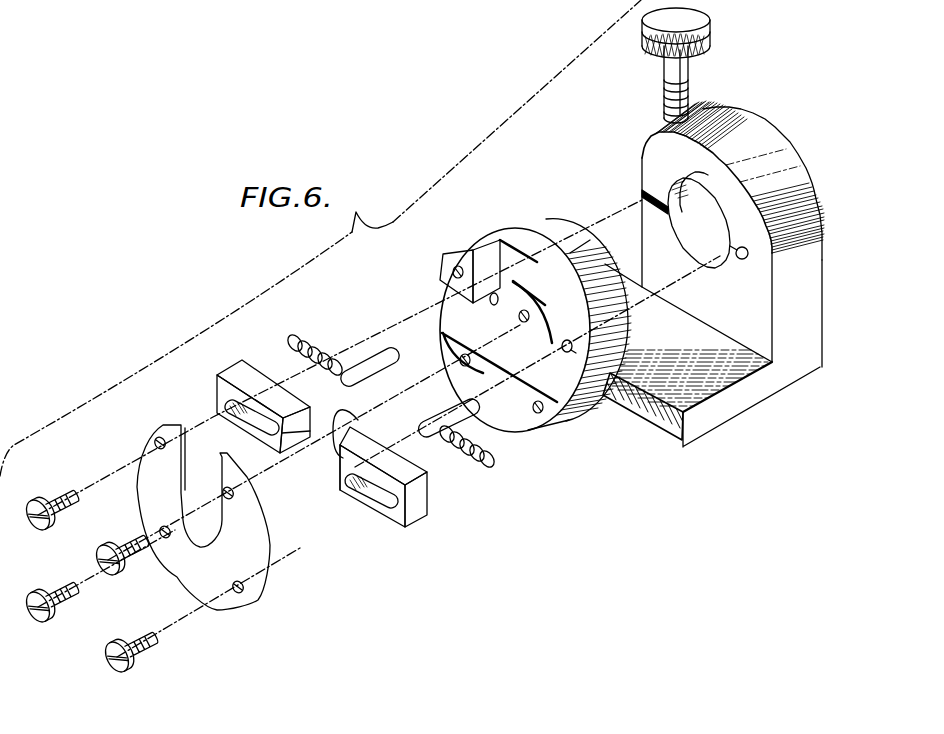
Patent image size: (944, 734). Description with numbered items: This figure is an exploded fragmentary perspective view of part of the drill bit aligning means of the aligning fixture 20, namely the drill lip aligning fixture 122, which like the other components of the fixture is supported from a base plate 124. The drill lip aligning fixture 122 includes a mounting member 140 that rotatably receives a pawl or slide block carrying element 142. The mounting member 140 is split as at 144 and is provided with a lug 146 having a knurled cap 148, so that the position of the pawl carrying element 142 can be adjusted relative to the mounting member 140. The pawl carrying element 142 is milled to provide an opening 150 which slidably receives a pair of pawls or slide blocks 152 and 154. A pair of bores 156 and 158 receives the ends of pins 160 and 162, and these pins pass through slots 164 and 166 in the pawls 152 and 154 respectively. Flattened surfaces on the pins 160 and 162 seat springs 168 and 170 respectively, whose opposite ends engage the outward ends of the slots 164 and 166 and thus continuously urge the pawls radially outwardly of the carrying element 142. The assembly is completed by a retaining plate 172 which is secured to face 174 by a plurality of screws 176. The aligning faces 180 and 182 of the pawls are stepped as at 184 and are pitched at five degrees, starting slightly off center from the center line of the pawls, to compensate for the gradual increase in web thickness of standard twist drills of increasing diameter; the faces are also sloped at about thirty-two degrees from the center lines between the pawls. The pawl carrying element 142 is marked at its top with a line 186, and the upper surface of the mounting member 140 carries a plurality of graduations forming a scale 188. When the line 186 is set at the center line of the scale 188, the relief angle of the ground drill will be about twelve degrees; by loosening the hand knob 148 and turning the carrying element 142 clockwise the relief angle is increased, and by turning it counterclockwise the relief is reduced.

The aligning fixture 20 is at (542, 323).
The drill lip aligning fixture 122 is at (718, 291).
The base plate 124 is at (737, 400).
The mounting member 140 is at (785, 177).
The pawl carrying element 142 is at (542, 289).
The split 144 is at (640, 197).
The lug 146 is at (688, 82).
The knurled cap 148 is at (711, 34).
The opening 150 is at (562, 388).
The pawl 152 is at (361, 500).
The pawl 154 is at (232, 415).
The bore 156 is at (574, 347).
The bore 158 is at (505, 262).
The pin 160 is at (467, 410).
The pin 162 is at (388, 350).
The slot 164 is at (372, 497).
The slot 166 is at (230, 402).
The spring 168 is at (470, 463).
The spring 170 is at (324, 343).
The retaining plate 172 is at (256, 574).
The face 174 is at (483, 372).
The screws 176 is at (68, 557).
The aligning face 180 is at (328, 483).
The aligning face 182 is at (299, 465).
The step 184 is at (353, 420).
The line 186 is at (542, 249).
The graduations 188 is at (762, 113).